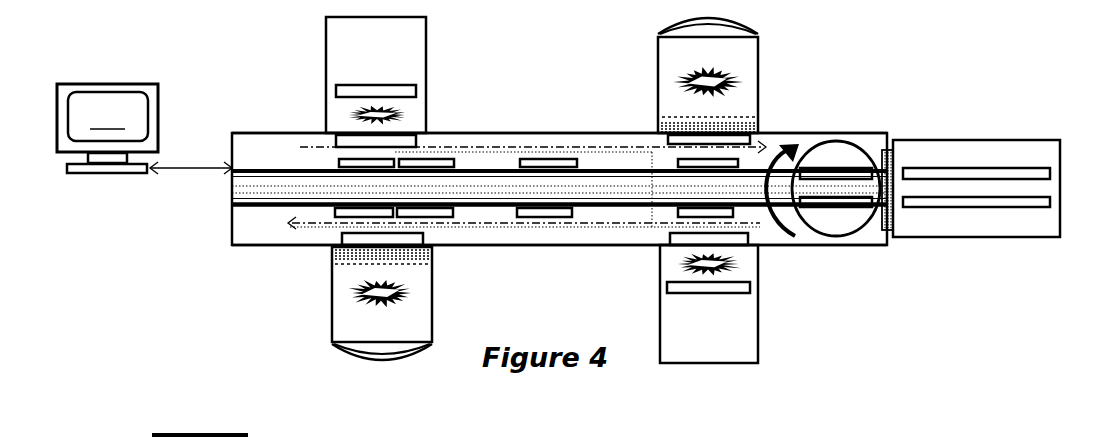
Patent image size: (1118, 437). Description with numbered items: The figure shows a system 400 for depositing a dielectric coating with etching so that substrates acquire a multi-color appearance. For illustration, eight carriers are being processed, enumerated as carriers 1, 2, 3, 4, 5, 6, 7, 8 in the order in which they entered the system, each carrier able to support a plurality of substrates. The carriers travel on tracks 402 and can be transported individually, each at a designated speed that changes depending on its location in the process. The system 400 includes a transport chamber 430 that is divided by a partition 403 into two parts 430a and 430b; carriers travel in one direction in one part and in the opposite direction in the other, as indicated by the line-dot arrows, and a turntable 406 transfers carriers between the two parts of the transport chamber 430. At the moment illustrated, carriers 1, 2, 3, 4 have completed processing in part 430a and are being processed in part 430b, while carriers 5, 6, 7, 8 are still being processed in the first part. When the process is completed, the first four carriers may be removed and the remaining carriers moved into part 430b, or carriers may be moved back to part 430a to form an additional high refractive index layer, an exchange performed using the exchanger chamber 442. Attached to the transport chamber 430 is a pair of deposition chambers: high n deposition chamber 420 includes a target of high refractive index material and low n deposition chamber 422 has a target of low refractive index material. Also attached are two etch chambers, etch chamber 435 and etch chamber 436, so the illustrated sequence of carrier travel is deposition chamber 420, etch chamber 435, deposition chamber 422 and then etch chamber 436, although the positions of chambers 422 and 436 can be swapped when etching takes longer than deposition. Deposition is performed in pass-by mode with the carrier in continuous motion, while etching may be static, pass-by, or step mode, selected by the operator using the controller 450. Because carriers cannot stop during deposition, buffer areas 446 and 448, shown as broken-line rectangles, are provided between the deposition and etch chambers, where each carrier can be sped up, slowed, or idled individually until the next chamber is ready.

The system 400 is at (881, 50).
The tracks 402 is at (247, 167).
The partition 403 is at (237, 197).
The turntable 406 is at (833, 233).
The high n deposition chamber 420 is at (426, 37).
The low n deposition chamber 422 is at (758, 323).
The transport chamber 430 is at (822, 133).
The first part of transport chamber 430a is at (264, 140).
The second part of transport chamber 430b is at (253, 232).
The etch chamber 435 is at (758, 42).
The etch chamber 436 is at (432, 318).
The exchanger chamber 442 is at (1060, 142).
The buffer area 446 is at (500, 157).
The buffer area 448 is at (510, 225).
The controller 450 is at (144, 129).
The carrier 1 is at (335, 213).
The carrier 2 is at (393, 212).
The carrier 3 is at (517, 211).
The carrier 4 is at (673, 212).
The carrier 5 is at (740, 163).
The carrier 6 is at (563, 160).
The carrier 7 is at (440, 161).
The carrier 8 is at (340, 162).